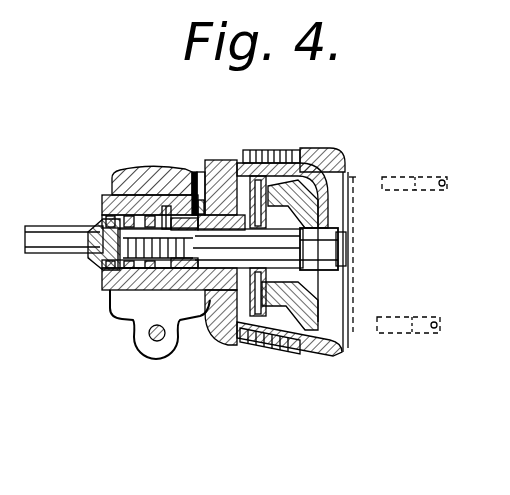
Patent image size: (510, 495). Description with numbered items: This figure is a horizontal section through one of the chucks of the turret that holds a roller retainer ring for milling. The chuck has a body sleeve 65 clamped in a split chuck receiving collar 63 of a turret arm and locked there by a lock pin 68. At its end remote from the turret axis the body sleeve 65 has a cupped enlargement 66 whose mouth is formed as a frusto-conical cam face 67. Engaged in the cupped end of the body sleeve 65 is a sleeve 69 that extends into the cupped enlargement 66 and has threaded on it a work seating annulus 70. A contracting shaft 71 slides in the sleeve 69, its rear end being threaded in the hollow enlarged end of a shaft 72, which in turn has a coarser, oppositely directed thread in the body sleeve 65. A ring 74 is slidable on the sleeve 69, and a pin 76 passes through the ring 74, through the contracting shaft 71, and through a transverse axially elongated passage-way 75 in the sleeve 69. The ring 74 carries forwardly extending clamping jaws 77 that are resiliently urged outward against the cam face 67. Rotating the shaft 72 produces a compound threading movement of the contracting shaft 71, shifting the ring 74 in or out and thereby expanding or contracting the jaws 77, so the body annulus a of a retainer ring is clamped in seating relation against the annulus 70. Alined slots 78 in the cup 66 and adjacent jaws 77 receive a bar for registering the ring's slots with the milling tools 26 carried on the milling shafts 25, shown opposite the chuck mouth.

The split chuck receiving collar 63 is at (122, 182).
The body sleeve 65 is at (167, 207).
The lock pin 68 is at (201, 172).
The cupped enlargement 66 is at (262, 170).
The ring 74 is at (295, 150).
The frusto-conical cam face 67 is at (322, 148).
The clamping jaws 77 is at (345, 168).
The body annulus a is at (354, 178).
The contracting shaft 71 is at (308, 246).
The alined slots 78 is at (343, 262).
The work seating annulus 70 is at (303, 303).
The pin 76 is at (262, 278).
The transverse axially elongated passage-way 75 is at (282, 280).
The sleeve 69 is at (207, 325).
The shaft 72 is at (86, 256).
The milling tools 26 is at (394, 182).
The milling shaft 25 is at (436, 181).